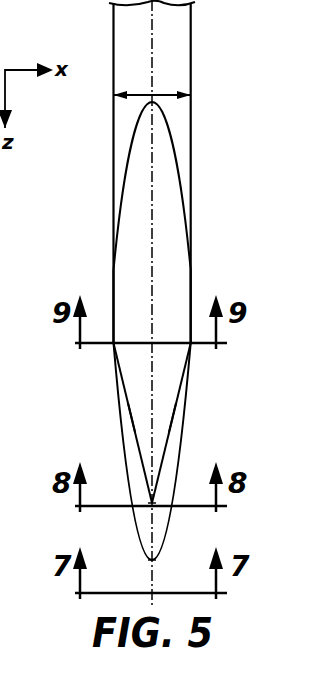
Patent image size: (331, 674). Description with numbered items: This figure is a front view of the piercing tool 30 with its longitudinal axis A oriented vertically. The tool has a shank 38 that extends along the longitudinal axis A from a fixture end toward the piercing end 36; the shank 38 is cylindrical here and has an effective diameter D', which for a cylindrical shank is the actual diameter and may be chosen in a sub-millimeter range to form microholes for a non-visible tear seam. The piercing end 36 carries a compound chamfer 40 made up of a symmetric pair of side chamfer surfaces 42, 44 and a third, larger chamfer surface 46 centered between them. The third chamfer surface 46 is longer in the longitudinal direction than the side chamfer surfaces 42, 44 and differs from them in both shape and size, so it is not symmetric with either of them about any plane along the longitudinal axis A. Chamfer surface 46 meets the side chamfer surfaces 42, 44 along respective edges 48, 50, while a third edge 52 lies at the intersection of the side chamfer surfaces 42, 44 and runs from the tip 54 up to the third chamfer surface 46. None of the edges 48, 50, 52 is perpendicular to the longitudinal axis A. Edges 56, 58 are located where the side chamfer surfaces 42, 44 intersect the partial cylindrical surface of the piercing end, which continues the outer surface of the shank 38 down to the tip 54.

The piercing tool 30 is at (224, 54).
The piercing end 36 is at (76, 231).
The shank 38 is at (178, 72).
The compound chamfer 40 is at (178, 293).
The side chamfer surface 42 is at (123, 398).
The side chamfer surface 44 is at (182, 397).
The third chamfer surface 46 is at (168, 218).
The edge 48 is at (130, 425).
The edge 50 is at (176, 408).
The third edge 52 is at (152, 520).
The tip 54 is at (152, 560).
The edge 56 is at (122, 455).
The edge 58 is at (182, 453).
The longitudinal axis A is at (152, 55).
The effective diameter D' is at (152, 79).